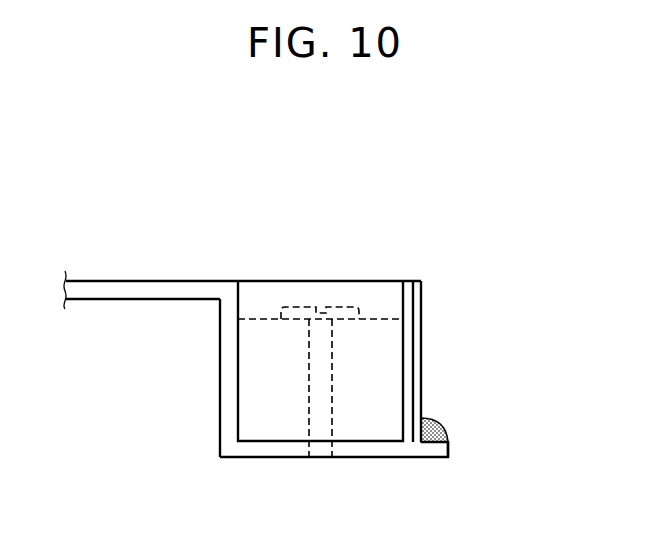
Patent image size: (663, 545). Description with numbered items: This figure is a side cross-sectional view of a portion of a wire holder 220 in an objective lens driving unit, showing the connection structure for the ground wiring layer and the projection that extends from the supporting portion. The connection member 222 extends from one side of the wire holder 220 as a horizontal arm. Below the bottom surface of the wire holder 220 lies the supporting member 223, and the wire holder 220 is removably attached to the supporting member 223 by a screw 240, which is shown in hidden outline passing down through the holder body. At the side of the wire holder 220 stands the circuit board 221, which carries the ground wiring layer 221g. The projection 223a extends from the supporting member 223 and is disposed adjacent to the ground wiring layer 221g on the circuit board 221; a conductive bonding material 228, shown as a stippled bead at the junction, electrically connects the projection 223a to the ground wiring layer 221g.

The connection member 222 is at (140, 280).
The wire holder 220 is at (270, 425).
The supporting member 223 is at (357, 452).
The projection 223a is at (449, 450).
The circuit board 221 is at (409, 282).
The ground wiring layer 221g is at (422, 343).
The conductive bonding material 228 is at (445, 427).
The screw 240 is at (333, 309).